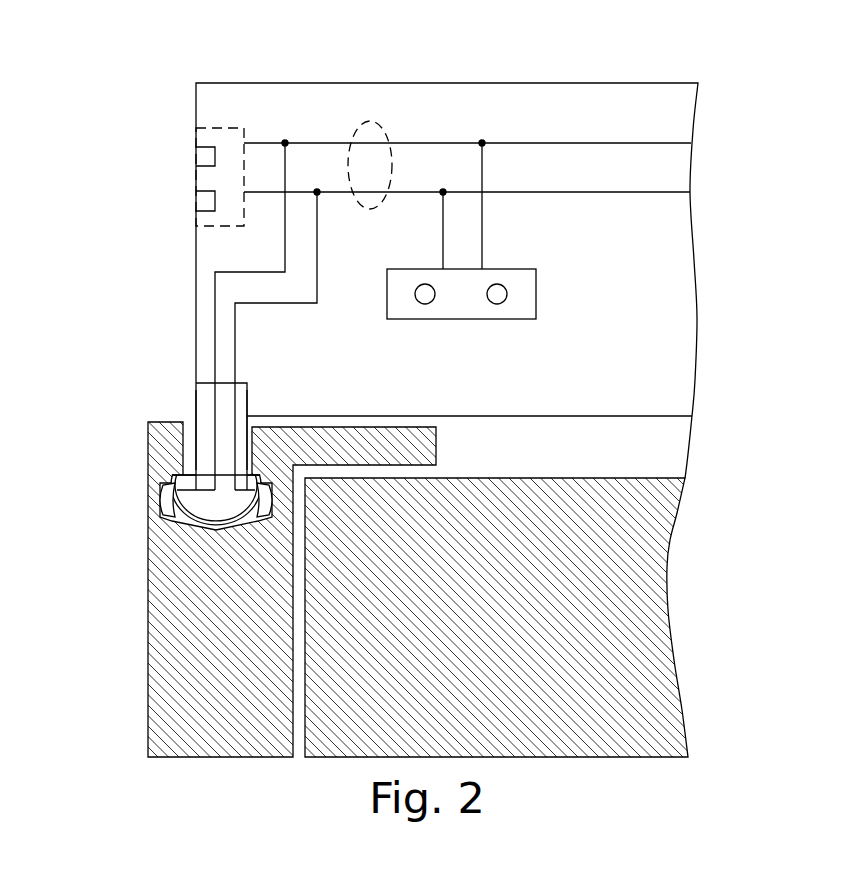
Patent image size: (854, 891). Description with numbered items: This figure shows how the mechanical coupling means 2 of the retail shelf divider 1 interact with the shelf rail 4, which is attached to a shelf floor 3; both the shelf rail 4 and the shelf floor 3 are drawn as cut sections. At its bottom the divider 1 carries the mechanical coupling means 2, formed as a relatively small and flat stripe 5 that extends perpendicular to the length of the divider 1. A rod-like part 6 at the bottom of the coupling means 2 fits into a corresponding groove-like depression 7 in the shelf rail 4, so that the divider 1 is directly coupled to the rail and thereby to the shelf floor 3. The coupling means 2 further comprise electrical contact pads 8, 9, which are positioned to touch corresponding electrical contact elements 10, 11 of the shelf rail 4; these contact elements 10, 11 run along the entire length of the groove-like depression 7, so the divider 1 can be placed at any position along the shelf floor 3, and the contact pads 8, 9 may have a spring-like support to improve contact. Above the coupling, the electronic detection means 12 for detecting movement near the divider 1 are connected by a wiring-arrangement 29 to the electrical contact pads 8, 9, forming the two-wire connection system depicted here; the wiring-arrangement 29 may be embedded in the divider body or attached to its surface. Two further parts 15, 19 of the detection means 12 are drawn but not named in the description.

The retail shelf divider 1 is at (194, 82).
The mechanical coupling means 2 is at (192, 382).
The shelf floor 3 is at (643, 650).
The shelf rail 4 is at (158, 710).
The stripe 5 is at (203, 408).
The rod-like part 6 is at (223, 507).
The groove-like depression 7 is at (198, 536).
The electrical contact pad 8 is at (177, 523).
The electrical contact pad 9 is at (252, 513).
The electrical contact element 10 is at (158, 495).
The electrical contact element 11 is at (273, 500).
The electronic detection means 12 is at (193, 126).
The contact 15 is at (196, 157).
The contact 19 is at (196, 202).
The wiring-arrangement 29 is at (385, 132).